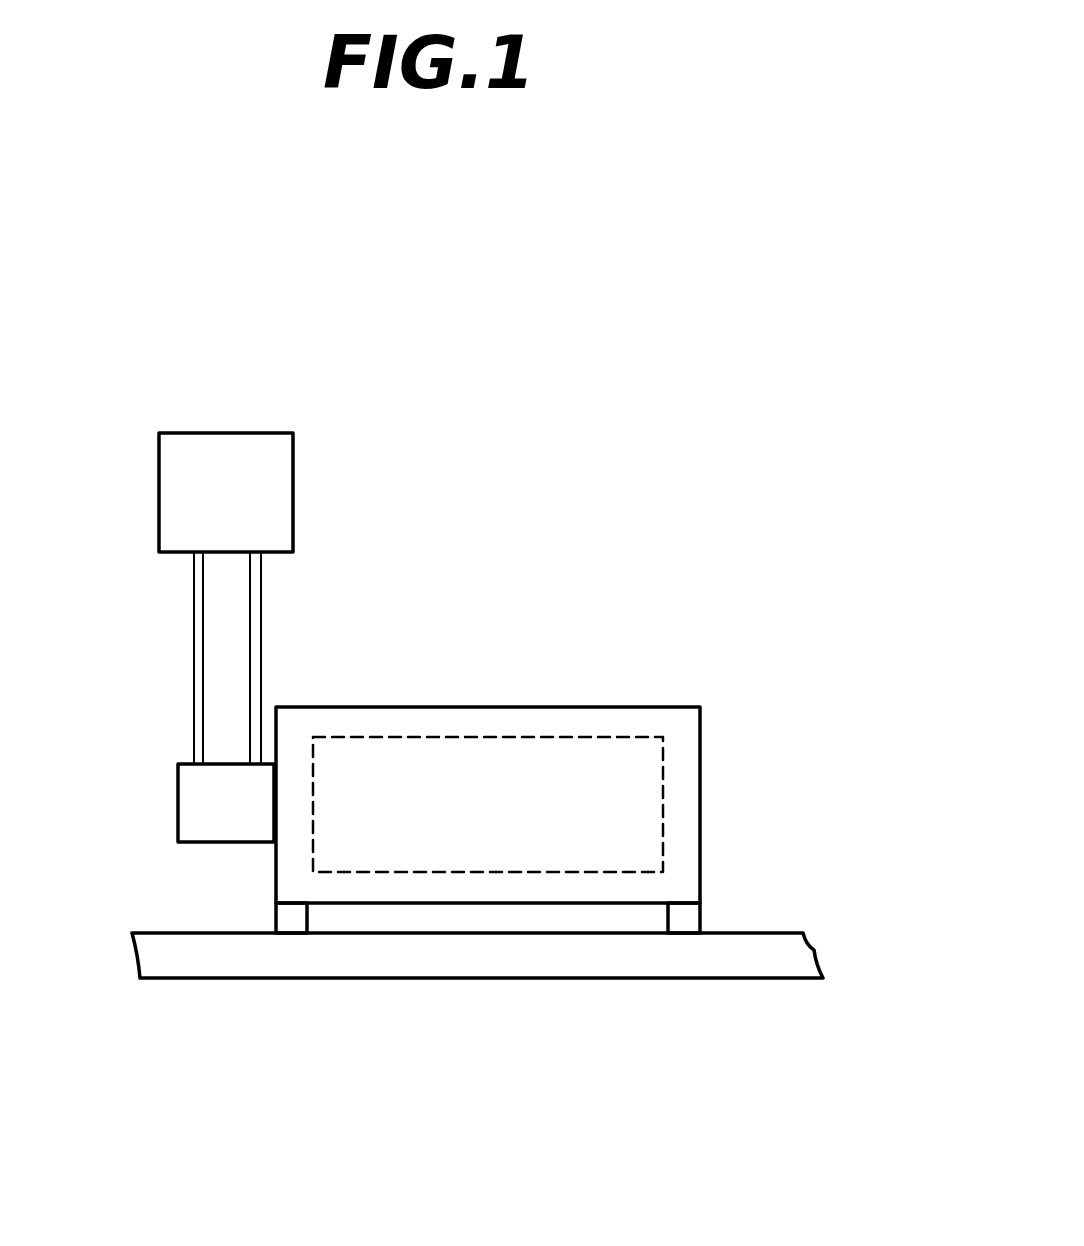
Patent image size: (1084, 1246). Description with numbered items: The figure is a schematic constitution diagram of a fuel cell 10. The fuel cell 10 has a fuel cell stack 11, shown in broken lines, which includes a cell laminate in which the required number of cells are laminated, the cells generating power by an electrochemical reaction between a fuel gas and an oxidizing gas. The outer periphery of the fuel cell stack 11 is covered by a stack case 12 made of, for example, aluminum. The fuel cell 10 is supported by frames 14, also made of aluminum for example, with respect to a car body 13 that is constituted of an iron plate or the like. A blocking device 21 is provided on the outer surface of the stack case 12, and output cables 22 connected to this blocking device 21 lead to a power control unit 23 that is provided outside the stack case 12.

The fuel cell 10 is at (750, 625).
The fuel cell stack 11 is at (478, 735).
The stack case 12 is at (703, 797).
The car body 13 is at (792, 958).
The frames 14 is at (703, 918).
The blocking device 21 is at (223, 813).
The output cables 22 is at (253, 643).
The power control unit 23 is at (273, 487).